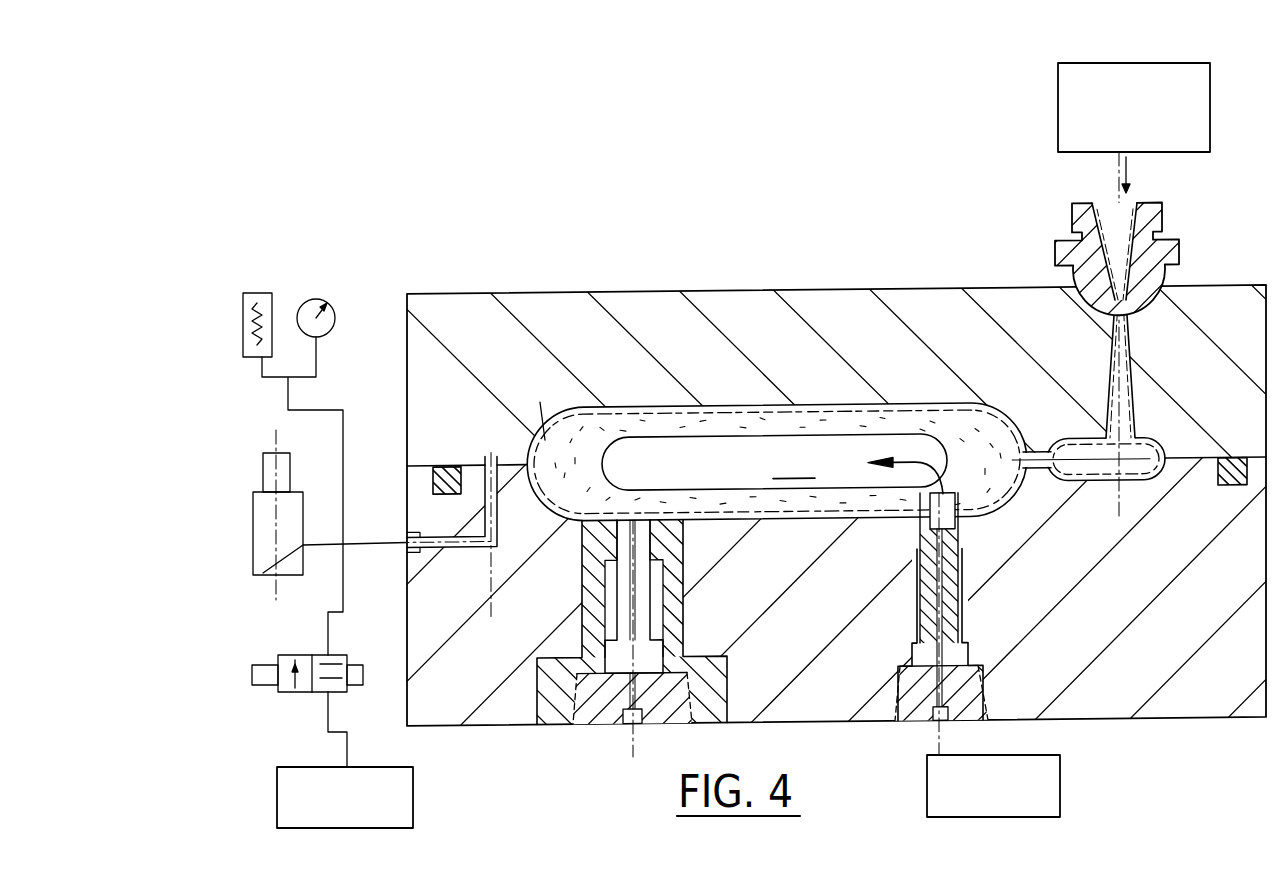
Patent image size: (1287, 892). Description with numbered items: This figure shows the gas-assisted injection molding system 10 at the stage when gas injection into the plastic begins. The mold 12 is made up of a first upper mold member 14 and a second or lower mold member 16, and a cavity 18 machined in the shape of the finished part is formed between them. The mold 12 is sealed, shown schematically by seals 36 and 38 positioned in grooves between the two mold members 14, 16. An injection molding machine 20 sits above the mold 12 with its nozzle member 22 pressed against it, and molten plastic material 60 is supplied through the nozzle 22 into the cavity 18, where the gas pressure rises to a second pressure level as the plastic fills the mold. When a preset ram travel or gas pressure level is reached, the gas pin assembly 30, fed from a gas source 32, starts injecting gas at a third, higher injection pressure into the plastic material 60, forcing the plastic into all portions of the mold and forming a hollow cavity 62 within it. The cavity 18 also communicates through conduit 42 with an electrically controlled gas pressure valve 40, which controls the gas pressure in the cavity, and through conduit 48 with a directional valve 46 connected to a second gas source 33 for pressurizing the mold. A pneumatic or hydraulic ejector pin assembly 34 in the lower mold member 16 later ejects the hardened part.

The gas-assisted injection molding system 10 is at (376, 204).
The mold 12 is at (772, 465).
The first upper mold member 14 is at (632, 290).
The second or lower mold member 16 is at (488, 723).
The cavity 18 is at (623, 421).
The injection molding machine 20 is at (1057, 108).
The nozzle member 22 is at (1055, 254).
The gas pin assembly 30 is at (960, 613).
The gas source 32 is at (1062, 774).
The gas source 33 is at (413, 786).
The ejector pin assembly 34 is at (600, 712).
The seal 36 is at (1235, 462).
The seal 38 is at (447, 462).
The electrically controlled gas pressure valve 40 is at (252, 518).
The conduit 42 is at (470, 546).
The directional valve 46 is at (318, 655).
The conduit 48 is at (345, 575).
The plastic material 60 is at (832, 411).
The hollow cavity 62 is at (683, 438).